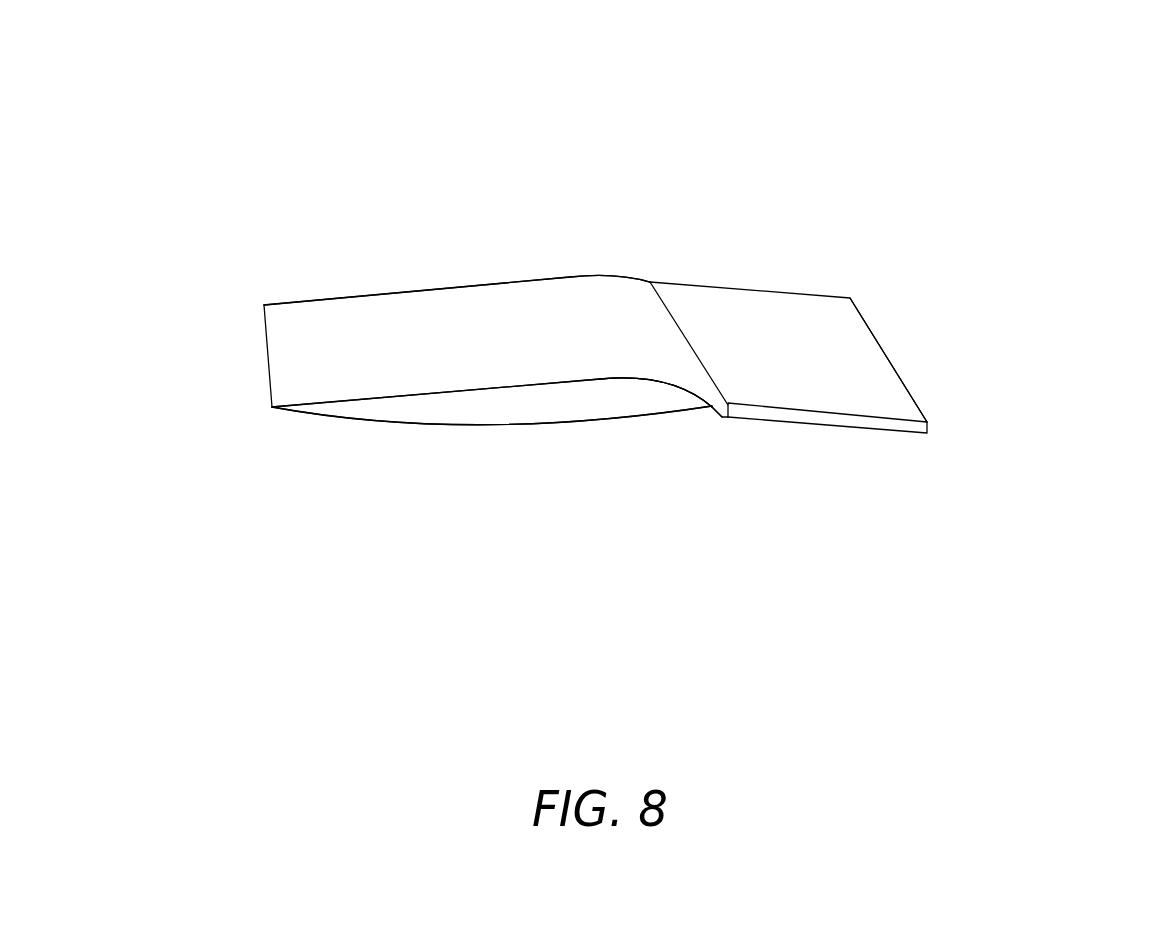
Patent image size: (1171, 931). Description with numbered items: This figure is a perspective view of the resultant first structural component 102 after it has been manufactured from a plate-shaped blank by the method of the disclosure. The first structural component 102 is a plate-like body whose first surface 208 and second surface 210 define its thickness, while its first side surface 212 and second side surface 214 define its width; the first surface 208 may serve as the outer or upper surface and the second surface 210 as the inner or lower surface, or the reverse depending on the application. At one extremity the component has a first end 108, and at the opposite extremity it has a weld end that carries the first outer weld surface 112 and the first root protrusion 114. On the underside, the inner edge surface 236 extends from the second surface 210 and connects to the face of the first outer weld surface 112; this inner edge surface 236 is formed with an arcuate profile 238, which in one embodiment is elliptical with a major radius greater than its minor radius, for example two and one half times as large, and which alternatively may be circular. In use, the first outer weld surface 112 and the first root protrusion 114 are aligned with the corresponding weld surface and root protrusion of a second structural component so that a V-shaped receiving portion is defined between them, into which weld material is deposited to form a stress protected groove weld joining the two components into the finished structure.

The first structural component 102 is at (1092, 90).
The first end 108 is at (246, 376).
The first outer weld surface 112 is at (860, 339).
The first root protrusion 114 is at (703, 426).
The first surface 208 is at (521, 282).
The second surface 210 is at (520, 410).
The first side surface 212 is at (380, 357).
The second side surface 214 is at (896, 369).
The inner edge surface 236 is at (665, 392).
The arcuate profile 238 is at (680, 404).